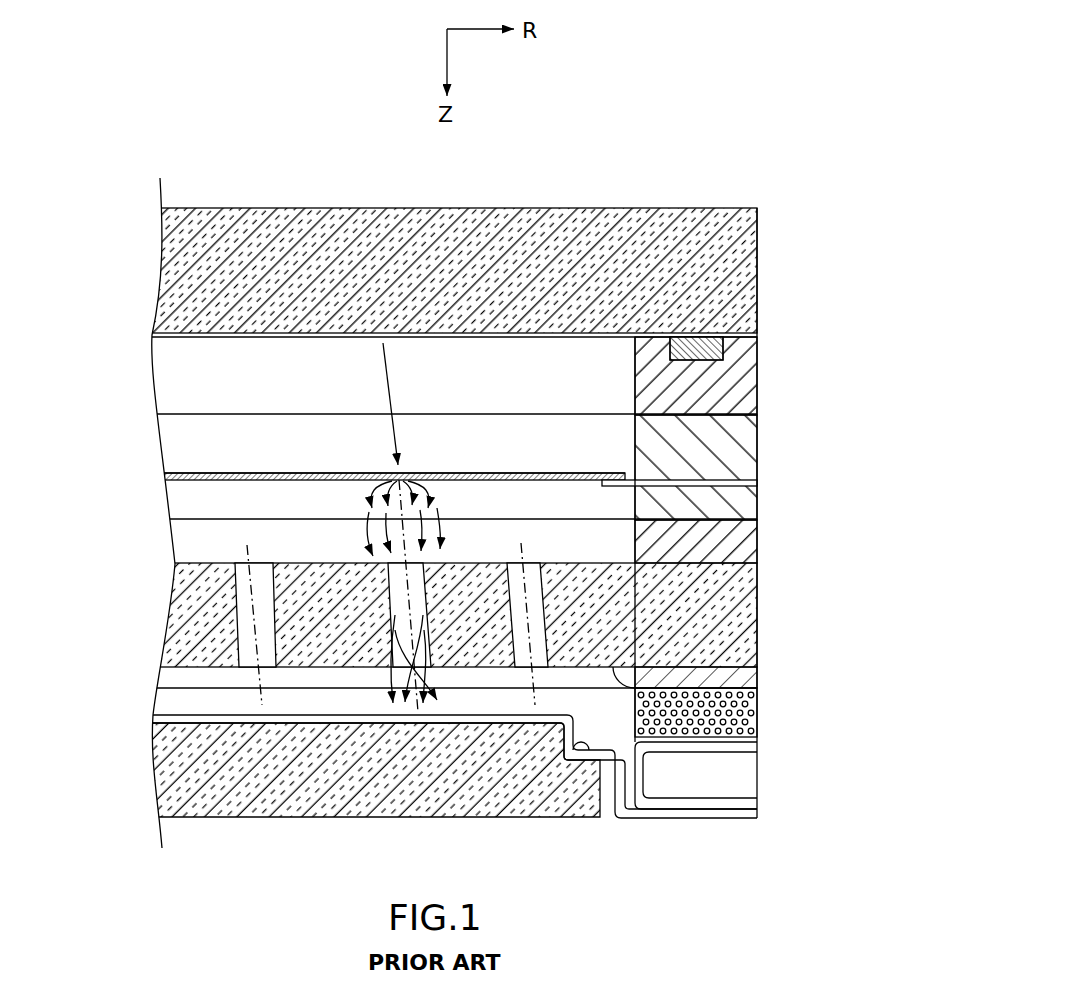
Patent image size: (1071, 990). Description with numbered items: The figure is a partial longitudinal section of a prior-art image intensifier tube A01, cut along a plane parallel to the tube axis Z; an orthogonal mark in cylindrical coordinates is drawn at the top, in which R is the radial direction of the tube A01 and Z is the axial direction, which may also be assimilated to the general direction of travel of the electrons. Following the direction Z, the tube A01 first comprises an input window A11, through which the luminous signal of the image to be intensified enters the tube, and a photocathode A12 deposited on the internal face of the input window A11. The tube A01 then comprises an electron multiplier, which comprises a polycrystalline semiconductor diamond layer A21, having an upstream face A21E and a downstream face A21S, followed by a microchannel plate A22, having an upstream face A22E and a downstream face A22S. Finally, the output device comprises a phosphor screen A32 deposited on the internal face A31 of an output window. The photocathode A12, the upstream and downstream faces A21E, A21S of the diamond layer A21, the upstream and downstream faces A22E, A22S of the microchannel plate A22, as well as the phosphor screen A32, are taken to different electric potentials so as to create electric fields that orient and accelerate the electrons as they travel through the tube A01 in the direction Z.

The image intensifier tube A01 is at (675, 152).
The input window A11 is at (190, 246).
The photocathode A12 is at (228, 341).
The polycrystalline semiconductor diamond layer A21 is at (150, 476).
The upstream face of the diamond layer A21E is at (237, 472).
The downstream face of the diamond layer A21S is at (548, 485).
The microchannel plate A22 is at (190, 605).
The upstream face of the microchannel plate A22E is at (195, 563).
The downstream face of the microchannel plate A22S is at (190, 668).
The internal face of the output window A31 is at (222, 712).
The phosphor screen A32 is at (150, 718).